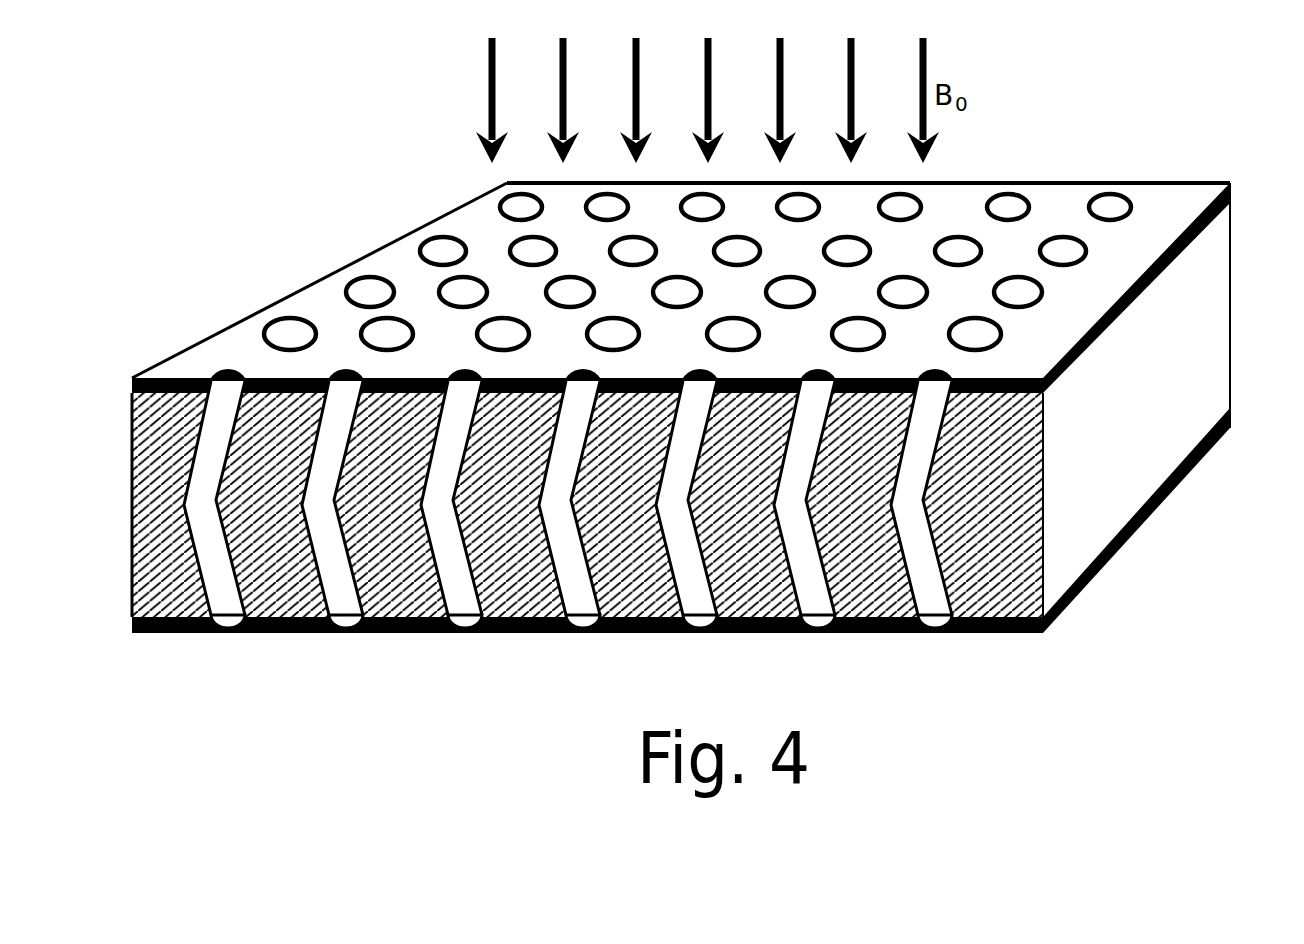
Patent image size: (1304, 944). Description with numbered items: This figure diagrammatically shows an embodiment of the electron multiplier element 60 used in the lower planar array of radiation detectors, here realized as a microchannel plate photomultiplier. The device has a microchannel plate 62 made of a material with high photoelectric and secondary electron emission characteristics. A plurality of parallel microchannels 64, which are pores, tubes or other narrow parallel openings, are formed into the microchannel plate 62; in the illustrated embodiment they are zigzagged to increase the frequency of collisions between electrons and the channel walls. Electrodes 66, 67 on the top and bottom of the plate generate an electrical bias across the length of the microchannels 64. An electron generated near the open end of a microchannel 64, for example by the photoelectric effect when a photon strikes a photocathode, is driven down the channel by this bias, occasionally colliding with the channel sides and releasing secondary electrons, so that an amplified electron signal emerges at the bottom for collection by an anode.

The electron multiplier element 60 is at (232, 191).
The microchannel plate 62 is at (1192, 313).
The microchannels 64 is at (500, 193).
The electrode 66 is at (1090, 357).
The electrode 67 is at (1120, 550).